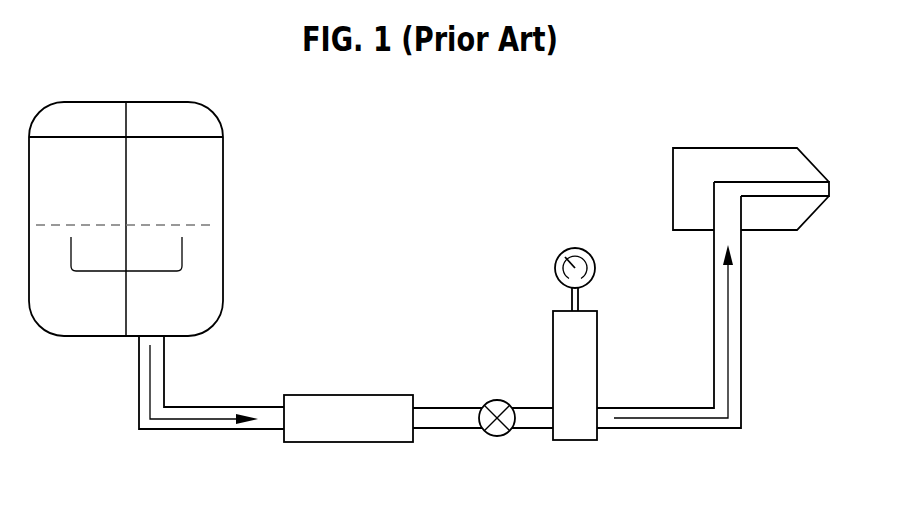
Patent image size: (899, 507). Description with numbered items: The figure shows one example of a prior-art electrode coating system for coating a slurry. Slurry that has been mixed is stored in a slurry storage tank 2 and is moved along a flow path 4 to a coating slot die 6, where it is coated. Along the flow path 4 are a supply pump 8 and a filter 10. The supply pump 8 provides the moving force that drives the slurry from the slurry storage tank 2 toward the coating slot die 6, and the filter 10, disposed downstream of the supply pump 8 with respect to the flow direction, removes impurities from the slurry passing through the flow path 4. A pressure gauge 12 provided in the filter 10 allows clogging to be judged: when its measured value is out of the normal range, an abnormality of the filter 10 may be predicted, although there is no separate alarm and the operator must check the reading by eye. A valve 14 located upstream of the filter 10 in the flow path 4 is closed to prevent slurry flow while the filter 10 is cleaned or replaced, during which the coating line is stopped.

The slurry storage tank 2 is at (223, 161).
The flow path 4 is at (234, 406).
The coating slot die 6 is at (725, 148).
The supply pump 8 is at (341, 395).
The filter 10 is at (552, 322).
The pressure gauge 12 is at (578, 248).
The valve 14 is at (487, 400).